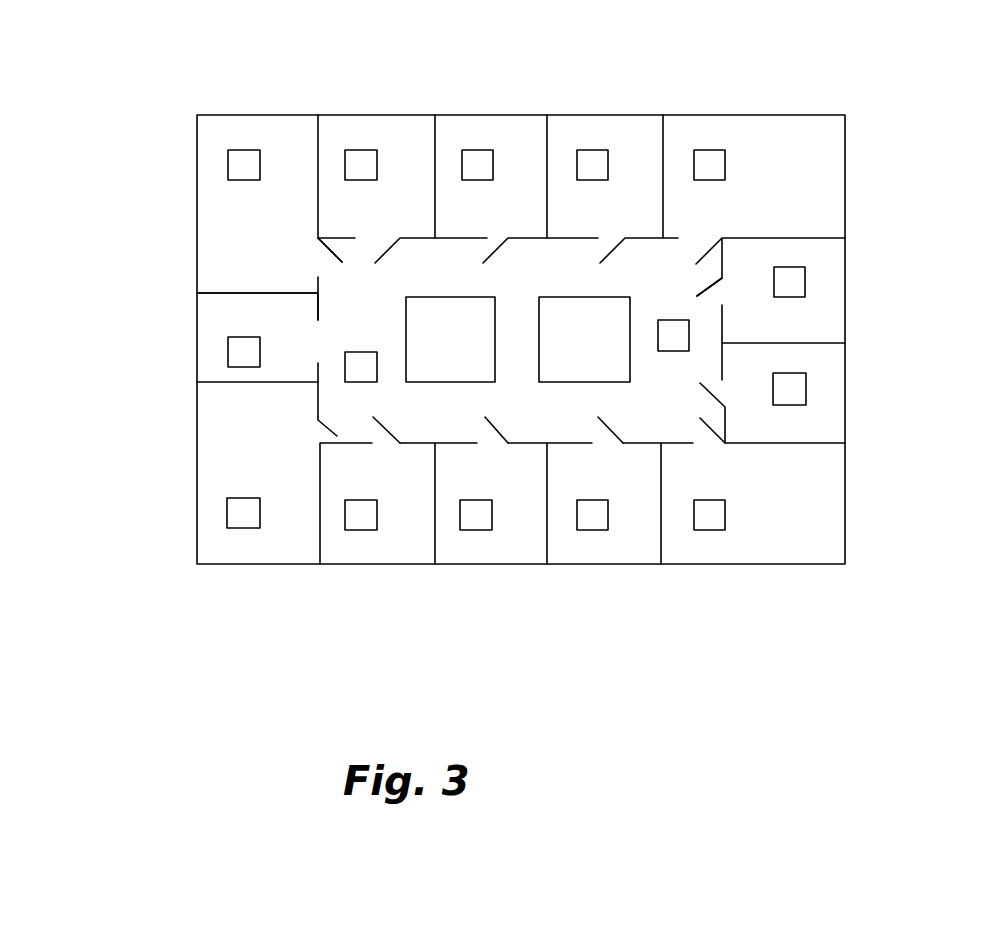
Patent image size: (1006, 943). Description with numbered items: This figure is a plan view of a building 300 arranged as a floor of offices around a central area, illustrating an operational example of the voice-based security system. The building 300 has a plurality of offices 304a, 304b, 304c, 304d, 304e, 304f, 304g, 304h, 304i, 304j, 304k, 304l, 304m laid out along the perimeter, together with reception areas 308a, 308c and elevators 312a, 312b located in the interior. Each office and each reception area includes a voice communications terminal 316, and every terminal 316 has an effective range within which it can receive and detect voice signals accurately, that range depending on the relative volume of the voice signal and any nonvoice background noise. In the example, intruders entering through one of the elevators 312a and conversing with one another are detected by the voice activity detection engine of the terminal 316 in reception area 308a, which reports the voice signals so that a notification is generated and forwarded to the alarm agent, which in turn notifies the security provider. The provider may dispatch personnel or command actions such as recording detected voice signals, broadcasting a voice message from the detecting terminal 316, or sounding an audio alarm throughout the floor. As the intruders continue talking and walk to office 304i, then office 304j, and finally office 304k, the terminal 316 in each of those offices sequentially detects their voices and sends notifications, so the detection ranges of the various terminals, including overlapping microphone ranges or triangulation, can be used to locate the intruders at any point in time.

The building 300 is at (572, 648).
The office 304a is at (752, 565).
The office 304b is at (845, 413).
The office 304c is at (845, 290).
The office 304d is at (845, 205).
The office 304e is at (620, 115).
The office 304f is at (528, 115).
The office 304g is at (403, 115).
The office 304h is at (260, 115).
The office 304i is at (197, 350).
The office 304j is at (197, 533).
The office 304k is at (405, 565).
The office 304l is at (515, 565).
The office 304m is at (581, 565).
The reception area 308a is at (365, 308).
The reception area 308c is at (693, 372).
The elevator 312a is at (477, 353).
The elevator 312b is at (615, 353).
The voice communications terminal 316 is at (228, 163).